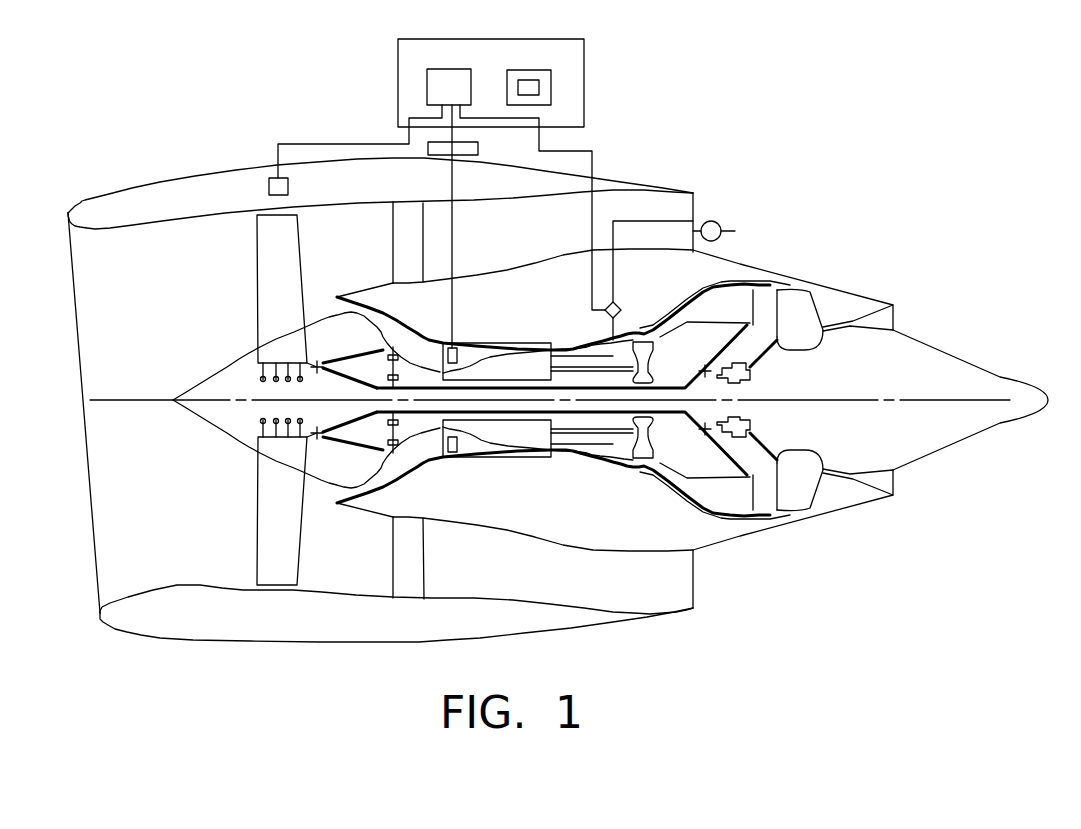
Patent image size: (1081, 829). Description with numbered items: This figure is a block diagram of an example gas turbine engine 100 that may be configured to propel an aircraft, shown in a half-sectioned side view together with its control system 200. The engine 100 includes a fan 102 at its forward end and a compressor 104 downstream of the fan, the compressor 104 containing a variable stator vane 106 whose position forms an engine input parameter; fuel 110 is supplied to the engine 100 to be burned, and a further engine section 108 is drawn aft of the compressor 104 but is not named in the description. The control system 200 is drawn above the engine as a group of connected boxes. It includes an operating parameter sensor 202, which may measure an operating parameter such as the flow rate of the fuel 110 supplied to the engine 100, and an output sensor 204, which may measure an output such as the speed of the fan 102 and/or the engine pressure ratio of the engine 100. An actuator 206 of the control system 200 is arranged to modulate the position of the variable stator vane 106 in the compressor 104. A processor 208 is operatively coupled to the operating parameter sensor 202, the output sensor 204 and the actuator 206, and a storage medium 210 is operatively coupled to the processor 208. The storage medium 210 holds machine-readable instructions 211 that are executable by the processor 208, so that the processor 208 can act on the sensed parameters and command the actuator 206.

The gas turbine engine 100 is at (856, 168).
The fan 102 is at (268, 285).
The compressor 104 is at (477, 357).
The variable stator vane 106 is at (437, 345).
The combustor 108 is at (587, 343).
The fuel 110 is at (634, 330).
The control system 200 is at (653, 60).
The operating parameter sensor 202 is at (620, 300).
The output sensor 204 is at (269, 183).
The actuator 206 is at (458, 146).
The processor 208 is at (447, 69).
The storage medium 210 is at (527, 70).
The machine-readable instructions 211 is at (540, 87).